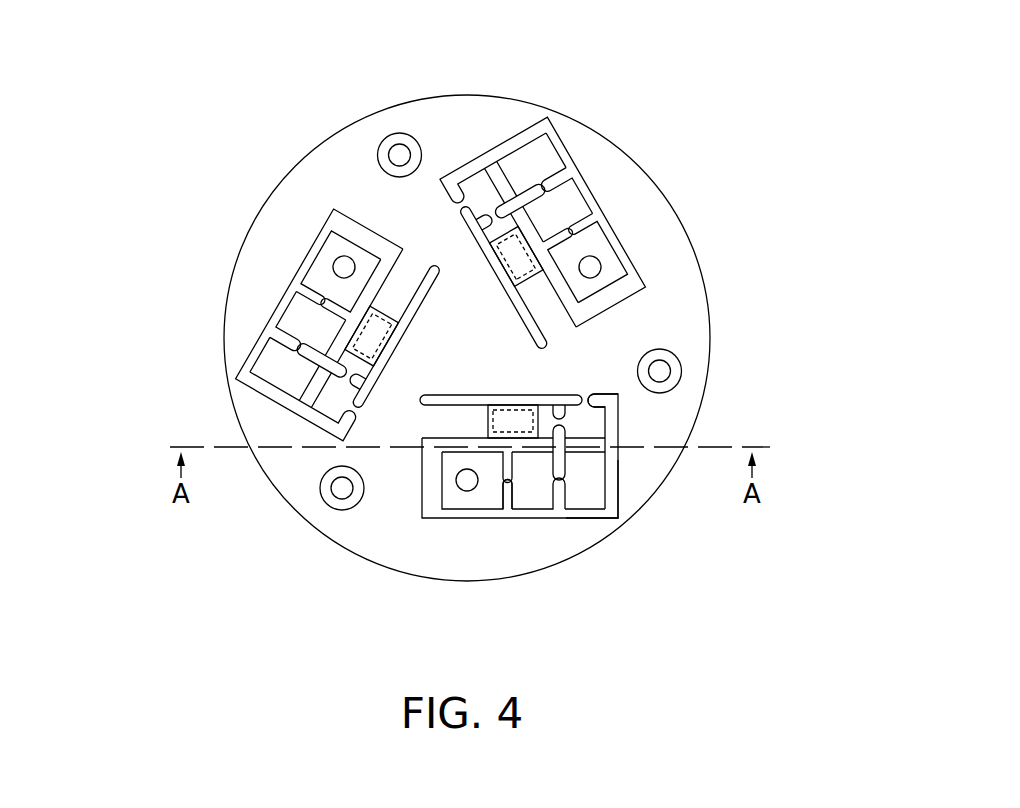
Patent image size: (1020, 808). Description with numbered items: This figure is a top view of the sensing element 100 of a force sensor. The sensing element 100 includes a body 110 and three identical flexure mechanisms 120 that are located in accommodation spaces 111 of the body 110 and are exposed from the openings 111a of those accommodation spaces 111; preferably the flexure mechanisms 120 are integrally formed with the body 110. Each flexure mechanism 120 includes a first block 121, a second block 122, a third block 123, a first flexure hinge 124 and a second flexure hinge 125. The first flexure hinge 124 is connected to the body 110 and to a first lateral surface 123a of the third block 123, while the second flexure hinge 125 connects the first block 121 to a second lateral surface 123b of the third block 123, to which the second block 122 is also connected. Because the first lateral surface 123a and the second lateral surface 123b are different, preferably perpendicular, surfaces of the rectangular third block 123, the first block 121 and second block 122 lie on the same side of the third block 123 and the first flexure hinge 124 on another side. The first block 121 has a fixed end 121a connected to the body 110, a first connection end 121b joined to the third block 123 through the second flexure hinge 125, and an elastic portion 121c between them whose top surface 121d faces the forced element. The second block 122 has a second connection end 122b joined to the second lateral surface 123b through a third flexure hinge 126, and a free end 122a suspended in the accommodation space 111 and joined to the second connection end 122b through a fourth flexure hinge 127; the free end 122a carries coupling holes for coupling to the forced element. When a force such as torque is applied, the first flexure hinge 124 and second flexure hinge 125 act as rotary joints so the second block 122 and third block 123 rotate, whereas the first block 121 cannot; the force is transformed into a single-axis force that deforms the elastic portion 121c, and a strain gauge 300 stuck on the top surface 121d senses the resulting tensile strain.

The sensing element 100 is at (161, 59).
The body 110 is at (308, 188).
The accommodation space 111 is at (433, 497).
The opening 111a is at (488, 513).
The flexure mechanism 120 is at (673, 262).
The first block 121 is at (144, 185).
The fixed end 121a is at (406, 284).
The first connection end 121b is at (340, 358).
The elastic portion 121c is at (353, 310).
The top surface 121d is at (500, 257).
The second block 122 is at (693, 100).
The free end 122a is at (608, 258).
The second connection end 122b is at (575, 210).
The third block 123 is at (585, 500).
The first lateral surface 123a is at (603, 398).
The second lateral surface 123b is at (563, 455).
The first flexure hinge 124 is at (540, 421).
The second flexure hinge 125 is at (495, 220).
The third flexure hinge 126 is at (530, 182).
The fourth flexure hinge 127 is at (507, 487).
The strain gauge 300 is at (488, 411).